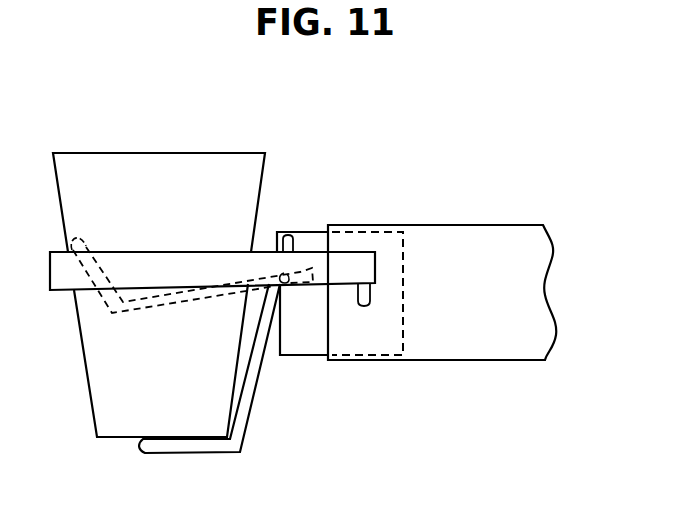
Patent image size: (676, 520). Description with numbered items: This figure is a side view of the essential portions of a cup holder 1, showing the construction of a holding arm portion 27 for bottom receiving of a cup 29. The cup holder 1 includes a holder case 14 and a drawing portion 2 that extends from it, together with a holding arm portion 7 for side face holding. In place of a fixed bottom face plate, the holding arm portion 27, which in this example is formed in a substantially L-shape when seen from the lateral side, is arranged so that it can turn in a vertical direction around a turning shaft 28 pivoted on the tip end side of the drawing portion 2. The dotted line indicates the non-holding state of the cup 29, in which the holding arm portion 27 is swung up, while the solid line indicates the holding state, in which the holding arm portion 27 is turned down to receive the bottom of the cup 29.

The cup holder 1 is at (511, 147).
The drawing portion 2 is at (372, 343).
The holding arm portion for side face holding 7 is at (256, 262).
The holder case 14 is at (453, 226).
The holding arm portion for bottom receiving 27 is at (205, 293).
The turning shaft 28 is at (288, 274).
The cup 29 is at (212, 162).